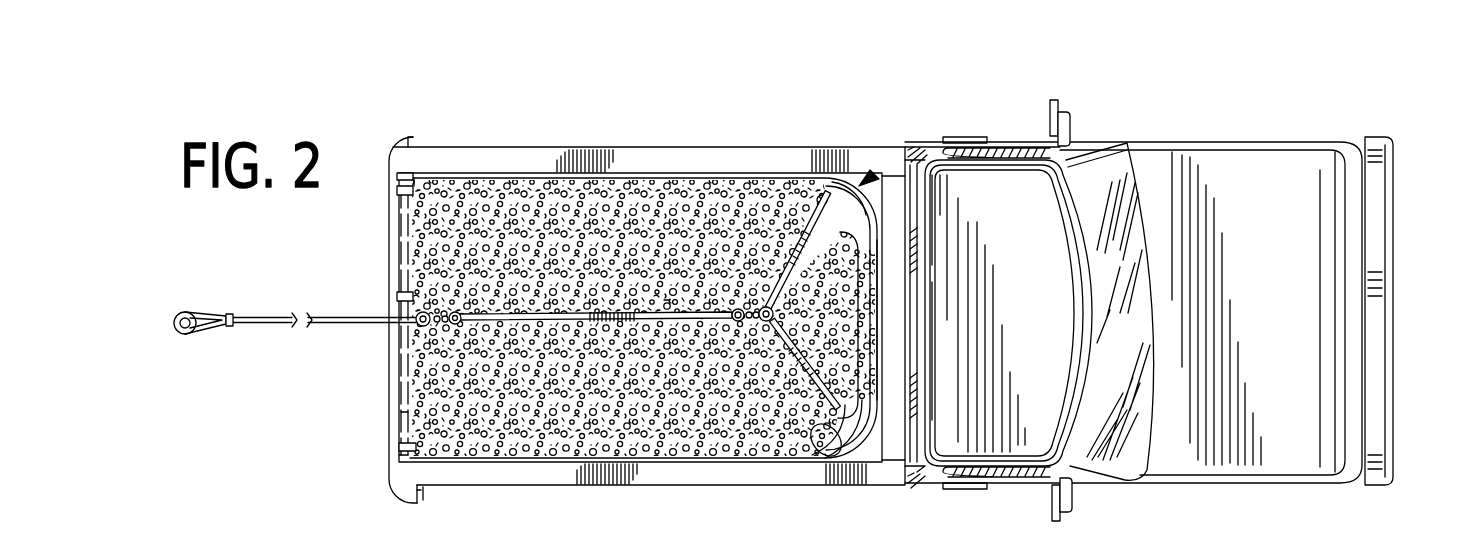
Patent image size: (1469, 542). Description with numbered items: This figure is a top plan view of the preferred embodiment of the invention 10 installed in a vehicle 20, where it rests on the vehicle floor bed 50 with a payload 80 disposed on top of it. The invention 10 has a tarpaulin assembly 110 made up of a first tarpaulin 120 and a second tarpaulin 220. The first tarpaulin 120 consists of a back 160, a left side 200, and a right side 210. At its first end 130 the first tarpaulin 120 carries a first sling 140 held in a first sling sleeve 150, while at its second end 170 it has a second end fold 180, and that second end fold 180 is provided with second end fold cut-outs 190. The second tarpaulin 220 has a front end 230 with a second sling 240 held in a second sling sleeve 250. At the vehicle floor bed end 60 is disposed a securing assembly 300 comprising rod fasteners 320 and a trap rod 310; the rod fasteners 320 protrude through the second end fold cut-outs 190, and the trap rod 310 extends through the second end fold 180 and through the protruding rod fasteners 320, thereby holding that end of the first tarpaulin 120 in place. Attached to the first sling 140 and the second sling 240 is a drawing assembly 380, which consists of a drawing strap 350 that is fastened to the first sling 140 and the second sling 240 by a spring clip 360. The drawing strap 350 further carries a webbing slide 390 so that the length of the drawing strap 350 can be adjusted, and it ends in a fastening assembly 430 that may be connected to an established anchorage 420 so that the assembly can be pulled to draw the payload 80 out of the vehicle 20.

The invention 10 is at (1198, 126).
The vehicle 20 is at (1316, 240).
The vehicle floor bed 50 is at (419, 178).
The vehicle floor bed end 60 is at (418, 488).
The payload 80 is at (768, 182).
The tarpaulin assembly 110 is at (872, 230).
The first tarpaulin 120 is at (845, 437).
The first end 130 is at (877, 247).
The first sling 140 is at (866, 178).
The first sling sleeve 150 is at (860, 425).
The back 160 is at (872, 275).
The second end 170 is at (400, 462).
The second end fold 180 is at (407, 422).
The second end fold cut-outs 190 is at (405, 205).
The left side 200 is at (620, 177).
The right side 210 is at (700, 463).
The second tarpaulin 220 is at (815, 447).
The front end 230 is at (855, 353).
The second sling 240 is at (820, 198).
The second sling sleeve 250 is at (838, 440).
The securing assembly 300 is at (394, 180).
The trap rod 310 is at (406, 177).
The rod fasteners 320 is at (397, 193).
The drawing strap 350 is at (255, 316).
The spring clip 360 is at (752, 308).
The drawing assembly 380 is at (662, 300).
The webbing slide 390 is at (414, 311).
The established anchorage 420 is at (186, 334).
The fastening assembly 430 is at (193, 311).